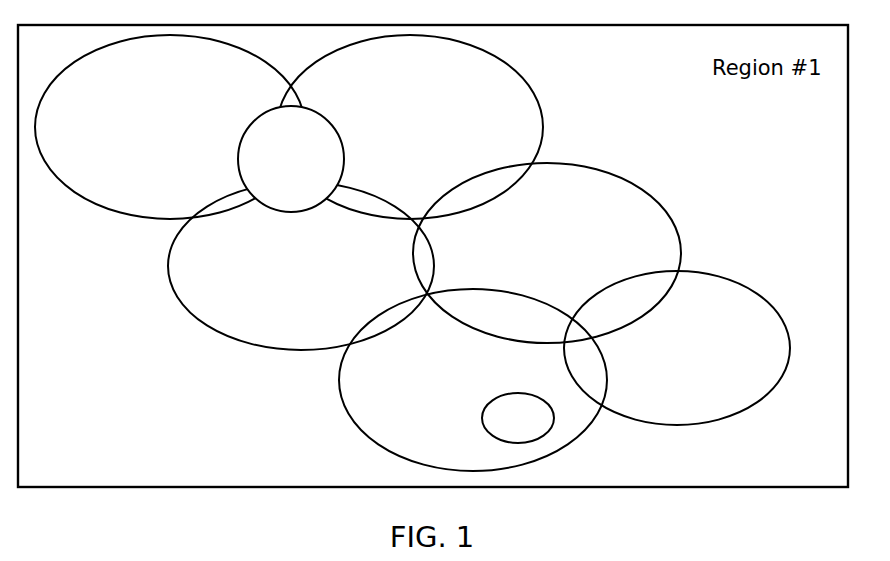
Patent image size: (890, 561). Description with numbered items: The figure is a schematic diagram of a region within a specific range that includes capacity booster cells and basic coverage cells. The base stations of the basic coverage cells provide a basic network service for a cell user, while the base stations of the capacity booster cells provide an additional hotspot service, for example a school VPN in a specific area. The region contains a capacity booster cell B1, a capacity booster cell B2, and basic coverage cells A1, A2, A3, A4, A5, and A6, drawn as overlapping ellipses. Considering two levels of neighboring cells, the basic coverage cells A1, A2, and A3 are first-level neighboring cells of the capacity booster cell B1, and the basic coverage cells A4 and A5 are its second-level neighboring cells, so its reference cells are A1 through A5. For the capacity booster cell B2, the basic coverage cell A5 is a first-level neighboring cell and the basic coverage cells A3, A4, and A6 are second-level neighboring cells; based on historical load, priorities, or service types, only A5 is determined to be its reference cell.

The basic coverage cell A1 is at (170, 127).
The basic coverage cell A2 is at (410, 127).
The basic coverage cell A3 is at (301, 266).
The basic coverage cell A4 is at (547, 253).
The basic coverage cell A5 is at (473, 380).
The basic coverage cell A6 is at (677, 348).
The capacity booster cell B1 is at (291, 159).
The capacity booster cell B2 is at (518, 418).